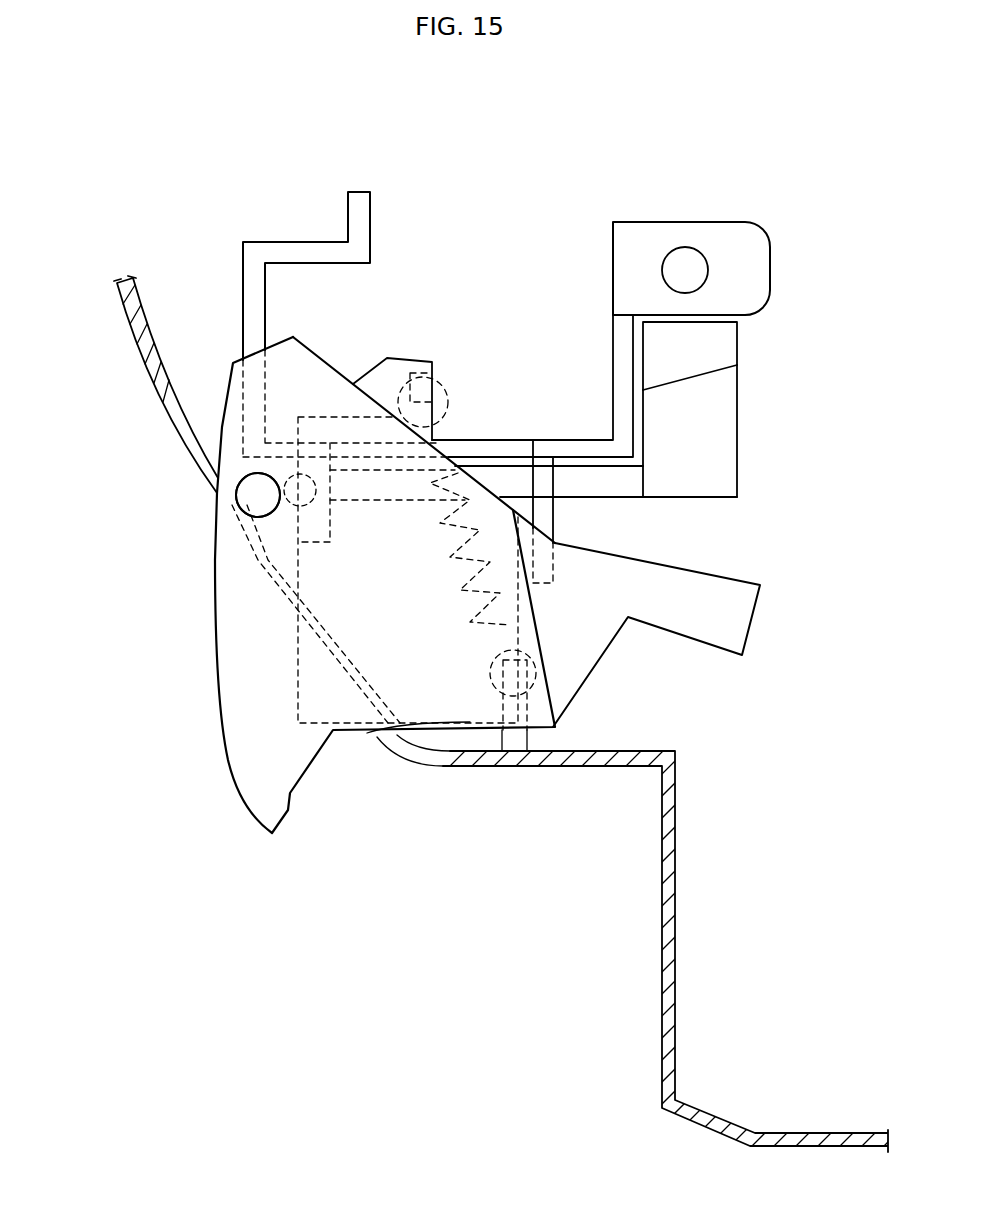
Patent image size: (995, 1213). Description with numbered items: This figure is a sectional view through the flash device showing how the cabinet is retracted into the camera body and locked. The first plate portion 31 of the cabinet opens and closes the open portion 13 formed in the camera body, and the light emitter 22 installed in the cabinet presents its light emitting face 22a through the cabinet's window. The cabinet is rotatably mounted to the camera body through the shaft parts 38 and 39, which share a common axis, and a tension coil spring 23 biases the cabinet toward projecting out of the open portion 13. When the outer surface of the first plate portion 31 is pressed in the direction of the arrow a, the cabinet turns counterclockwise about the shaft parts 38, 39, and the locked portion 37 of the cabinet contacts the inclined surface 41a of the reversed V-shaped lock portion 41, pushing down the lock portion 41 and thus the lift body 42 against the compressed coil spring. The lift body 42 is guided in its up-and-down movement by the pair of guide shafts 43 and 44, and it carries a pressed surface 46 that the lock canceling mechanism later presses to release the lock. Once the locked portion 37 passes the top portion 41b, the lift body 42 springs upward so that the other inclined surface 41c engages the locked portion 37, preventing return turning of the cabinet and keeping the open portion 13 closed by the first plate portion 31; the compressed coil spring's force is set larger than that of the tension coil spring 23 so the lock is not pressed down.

The open portion 13 is at (168, 405).
The light emitter 22 is at (290, 698).
The light emitting face 22a is at (387, 733).
The tension coil spring 23 is at (513, 633).
The first plate portion 31 is at (213, 653).
The locked portion 37 is at (733, 620).
The shaft part 38 is at (252, 497).
The shaft part 39 is at (258, 495).
The reversed V-shaped lock portion 41 is at (768, 409).
The inclined surface 41a is at (703, 432).
The top portion 41b is at (697, 377).
The inclined surface 41c is at (710, 340).
The lift body 42 is at (715, 498).
The guide shaft 43 is at (675, 267).
The guide shaft 44 is at (293, 512).
The pressed surface 46 is at (592, 493).
The arrow a is at (203, 760).